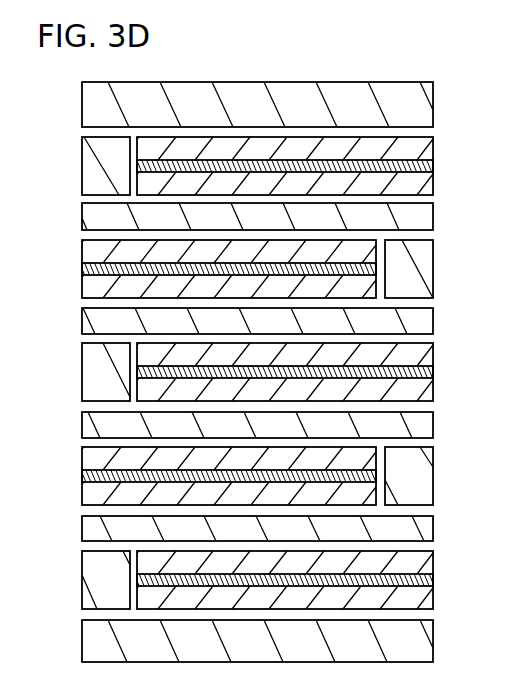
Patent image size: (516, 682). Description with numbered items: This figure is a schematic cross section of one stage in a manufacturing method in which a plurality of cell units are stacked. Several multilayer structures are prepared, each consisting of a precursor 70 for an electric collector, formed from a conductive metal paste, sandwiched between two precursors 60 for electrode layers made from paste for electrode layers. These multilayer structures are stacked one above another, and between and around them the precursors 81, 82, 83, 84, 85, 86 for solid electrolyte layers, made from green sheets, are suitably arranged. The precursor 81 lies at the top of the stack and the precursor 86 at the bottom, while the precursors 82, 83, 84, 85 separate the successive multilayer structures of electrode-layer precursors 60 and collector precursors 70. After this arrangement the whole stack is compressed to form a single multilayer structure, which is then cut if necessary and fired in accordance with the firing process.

The precursor for an electrode layer 60 is at (420, 148).
The precursor for an electric collector 70 is at (433, 162).
The precursor for a solid electrolyte layer 81 is at (420, 101).
The precursor for a solid electrolyte layer 82 is at (420, 214).
The precursor for a solid electrolyte layer 83 is at (420, 313).
The precursor for a solid electrolyte layer 84 is at (423, 425).
The precursor for a solid electrolyte layer 85 is at (422, 525).
The precursor for a solid electrolyte layer 86 is at (425, 638).